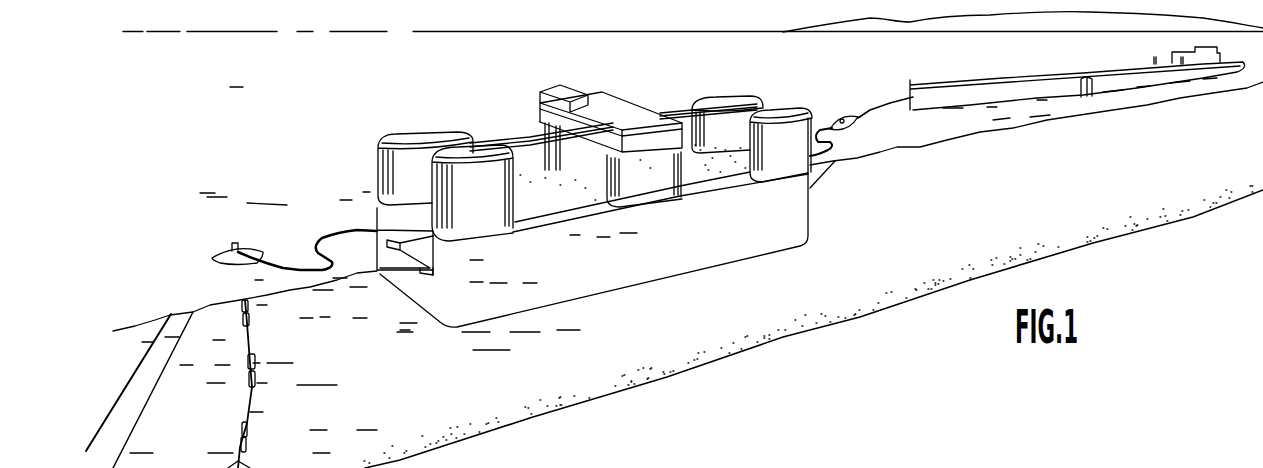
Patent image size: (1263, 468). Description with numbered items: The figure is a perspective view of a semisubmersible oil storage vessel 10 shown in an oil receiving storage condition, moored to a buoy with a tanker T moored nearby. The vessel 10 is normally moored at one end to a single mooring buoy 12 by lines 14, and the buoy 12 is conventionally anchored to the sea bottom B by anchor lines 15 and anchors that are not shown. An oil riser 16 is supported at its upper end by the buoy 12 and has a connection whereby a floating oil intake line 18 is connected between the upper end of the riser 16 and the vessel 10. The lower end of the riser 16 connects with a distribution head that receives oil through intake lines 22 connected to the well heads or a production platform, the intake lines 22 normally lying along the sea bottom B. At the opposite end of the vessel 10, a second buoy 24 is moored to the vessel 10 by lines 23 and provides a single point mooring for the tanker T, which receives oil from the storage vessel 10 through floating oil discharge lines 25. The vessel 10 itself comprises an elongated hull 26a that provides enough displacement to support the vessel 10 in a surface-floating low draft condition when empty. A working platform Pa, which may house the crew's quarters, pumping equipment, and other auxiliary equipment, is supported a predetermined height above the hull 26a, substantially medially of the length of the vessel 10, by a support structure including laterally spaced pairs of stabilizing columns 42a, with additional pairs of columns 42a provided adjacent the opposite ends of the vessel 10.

The semisubmersible oil storage vessel 10 is at (588, 225).
The single mooring buoy 12 is at (219, 246).
The lines 14 is at (394, 274).
The anchor lines 15 is at (133, 377).
The oil riser 16 is at (252, 338).
The floating oil intake line 18 is at (334, 230).
The intake lines 22 is at (191, 467).
The lines 23 is at (836, 162).
The second buoy 24 is at (850, 114).
The floating oil discharge lines 25 is at (822, 128).
The elongated hull 26a is at (683, 258).
The stabilizing columns 42a is at (387, 168).
The sea bottom B is at (537, 413).
The working platform Pa is at (634, 97).
The tanker T is at (1034, 71).